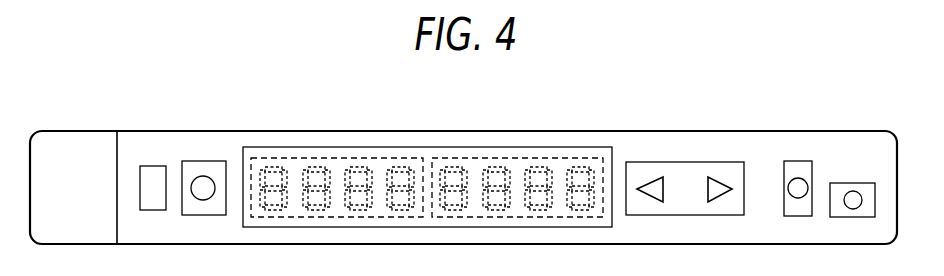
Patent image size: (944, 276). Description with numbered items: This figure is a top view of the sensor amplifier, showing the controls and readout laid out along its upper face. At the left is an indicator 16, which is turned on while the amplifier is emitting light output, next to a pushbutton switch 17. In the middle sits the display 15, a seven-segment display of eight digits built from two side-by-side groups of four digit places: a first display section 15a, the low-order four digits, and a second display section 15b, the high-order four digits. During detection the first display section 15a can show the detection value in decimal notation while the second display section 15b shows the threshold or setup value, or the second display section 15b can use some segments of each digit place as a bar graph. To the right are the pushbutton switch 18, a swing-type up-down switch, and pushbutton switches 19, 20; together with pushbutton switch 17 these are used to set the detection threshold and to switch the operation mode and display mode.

The display 15 is at (427, 157).
The first display section 15a is at (517, 155).
The second display section 15b is at (337, 155).
The indicator 16 is at (153, 166).
The pushbutton switch 17 is at (202, 161).
The pushbutton switch 18 is at (685, 162).
The pushbutton switch 19 is at (798, 161).
The pushbutton switch 20 is at (853, 183).